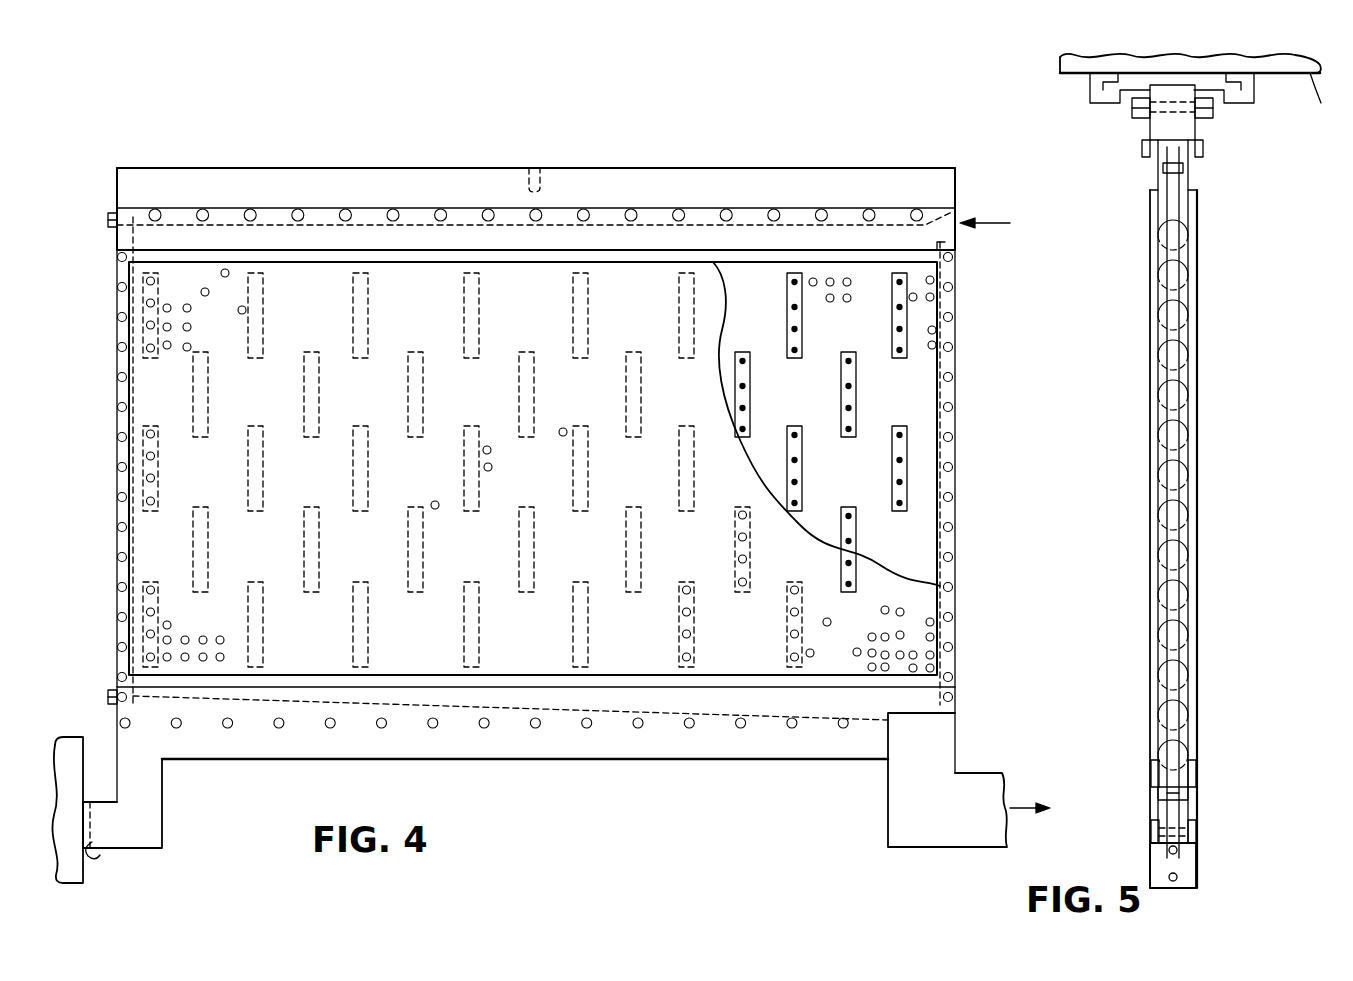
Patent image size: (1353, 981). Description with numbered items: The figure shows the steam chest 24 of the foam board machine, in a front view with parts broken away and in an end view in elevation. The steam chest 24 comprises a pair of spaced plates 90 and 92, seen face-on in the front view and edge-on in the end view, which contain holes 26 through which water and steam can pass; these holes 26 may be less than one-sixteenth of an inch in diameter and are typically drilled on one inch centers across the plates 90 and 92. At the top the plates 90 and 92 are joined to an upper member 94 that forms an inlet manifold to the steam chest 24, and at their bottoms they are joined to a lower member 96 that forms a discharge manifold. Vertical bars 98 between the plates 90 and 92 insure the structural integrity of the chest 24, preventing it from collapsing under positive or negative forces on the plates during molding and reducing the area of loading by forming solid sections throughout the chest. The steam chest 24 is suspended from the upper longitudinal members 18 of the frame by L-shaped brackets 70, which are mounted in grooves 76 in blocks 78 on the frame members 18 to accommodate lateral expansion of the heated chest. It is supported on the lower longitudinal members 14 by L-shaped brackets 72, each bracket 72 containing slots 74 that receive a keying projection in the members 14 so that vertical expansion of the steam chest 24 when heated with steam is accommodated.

In FIG. 4, the lower longitudinal member 14 is at (62, 895).
In FIG. 5, the upper longitudinal member 18 is at (1191, 93).
In FIG. 4, the steam chest 24 is at (970, 387).
In FIG. 5, the steam chest 24 is at (1215, 298).
In FIG. 4, the holes 26 is at (939, 297).
In FIG. 5, the L-shaped bracket 70 is at (1143, 146).
In FIG. 4, the L-shaped bracket 72 is at (148, 822).
In FIG. 4, the slot 74 is at (92, 858).
In FIG. 5, the groove 76 is at (1132, 110).
In FIG. 5, the block 78 is at (1092, 94).
In FIG. 5, the plate 90 is at (1198, 445).
In FIG. 5, the plate 92 is at (1150, 485).
In FIG. 4, the upper member 94 is at (955, 181).
In FIG. 5, the upper member 94 is at (1165, 128).
In FIG. 4, the lower member 96 is at (607, 760).
In FIG. 5, the lower member 96 is at (1262, 845).
In FIG. 4, the vertical bar 98 is at (893, 470).